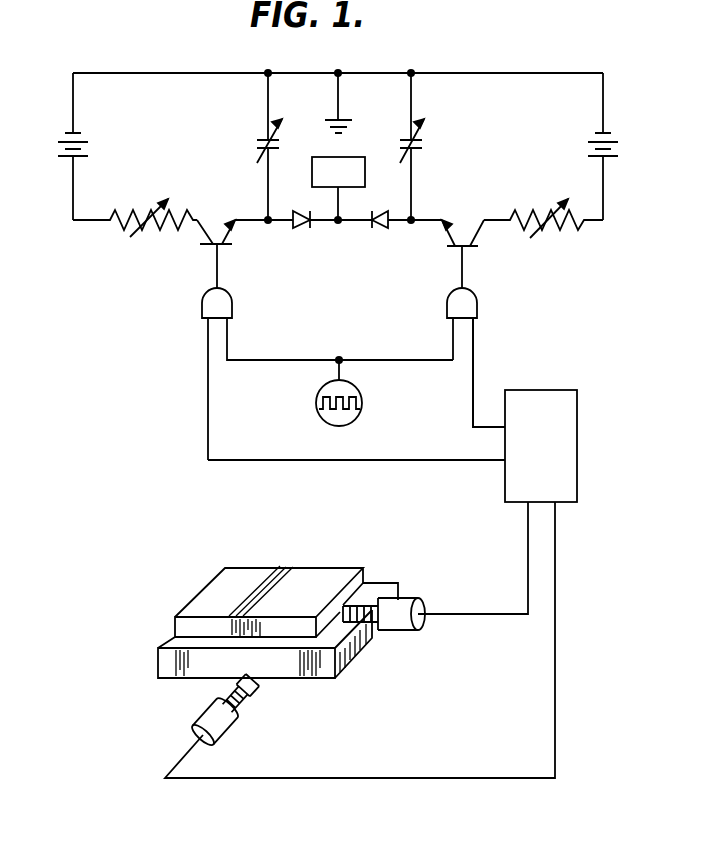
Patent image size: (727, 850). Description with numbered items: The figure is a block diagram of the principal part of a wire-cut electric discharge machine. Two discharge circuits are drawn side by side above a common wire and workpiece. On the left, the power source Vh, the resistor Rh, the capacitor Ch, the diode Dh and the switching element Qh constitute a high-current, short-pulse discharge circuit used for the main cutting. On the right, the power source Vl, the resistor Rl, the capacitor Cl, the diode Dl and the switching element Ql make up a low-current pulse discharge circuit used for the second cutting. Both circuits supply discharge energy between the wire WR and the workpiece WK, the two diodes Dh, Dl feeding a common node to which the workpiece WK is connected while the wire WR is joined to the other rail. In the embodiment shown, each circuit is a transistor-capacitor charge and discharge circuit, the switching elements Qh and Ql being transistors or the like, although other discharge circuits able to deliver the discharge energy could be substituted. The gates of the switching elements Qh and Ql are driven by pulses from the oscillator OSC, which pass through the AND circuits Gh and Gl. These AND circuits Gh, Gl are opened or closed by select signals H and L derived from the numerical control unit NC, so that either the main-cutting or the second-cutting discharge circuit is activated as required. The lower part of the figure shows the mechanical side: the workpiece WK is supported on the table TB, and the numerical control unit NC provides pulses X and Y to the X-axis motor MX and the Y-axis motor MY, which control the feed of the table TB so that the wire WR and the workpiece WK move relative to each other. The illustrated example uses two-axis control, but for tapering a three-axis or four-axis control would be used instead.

The power source Vh is at (78, 134).
The power source Vl is at (606, 133).
The resistor Rh is at (135, 213).
The resistor Rl is at (538, 216).
The switching element Qh is at (225, 232).
The switching element Ql is at (476, 224).
The capacitor Ch is at (258, 140).
The capacitor Cl is at (418, 150).
The wire WR is at (351, 103).
The workpiece WK is at (338, 188).
The diode Dh is at (302, 230).
The diode Dl is at (378, 230).
The AND circuit Gh is at (203, 304).
The AND circuit Gl is at (478, 305).
The oscillator OSC is at (362, 400).
The numerical control unit NC is at (567, 398).
The select signal L is at (489, 372).
The select signal H is at (356, 443).
The pulses X is at (473, 558).
The pulses Y is at (360, 640).
The table TB is at (172, 640).
The X-axis motor MX is at (403, 598).
The Y-axis motor MY is at (228, 723).